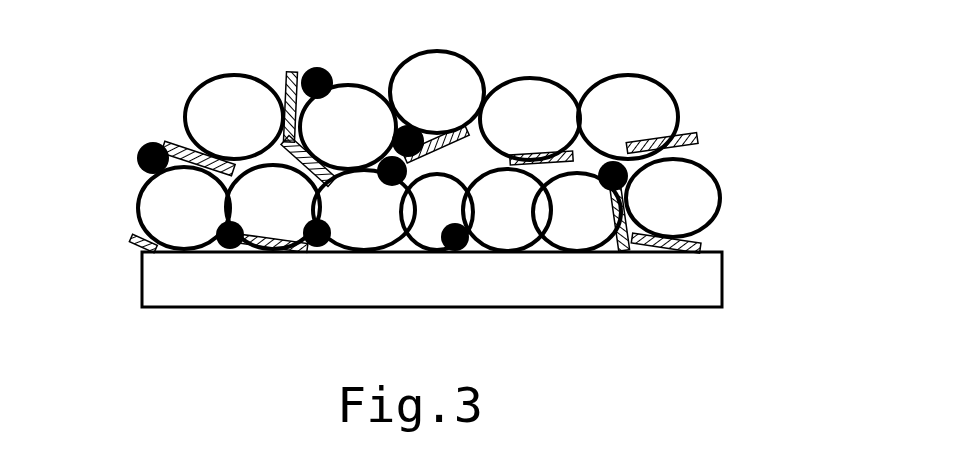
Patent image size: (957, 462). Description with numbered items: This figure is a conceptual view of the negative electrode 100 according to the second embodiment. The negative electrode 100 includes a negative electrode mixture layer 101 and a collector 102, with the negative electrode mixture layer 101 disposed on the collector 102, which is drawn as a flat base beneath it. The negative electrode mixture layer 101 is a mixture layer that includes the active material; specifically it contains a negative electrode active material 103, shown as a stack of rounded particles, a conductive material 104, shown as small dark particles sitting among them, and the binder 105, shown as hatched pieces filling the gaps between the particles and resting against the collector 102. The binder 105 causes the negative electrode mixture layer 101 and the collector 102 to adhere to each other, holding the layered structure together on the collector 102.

The negative electrode 100 is at (113, 32).
The negative electrode mixture layer 101 is at (440, 132).
The collector 102 is at (707, 288).
The negative electrode active material 103 is at (722, 190).
The conductive material 104 is at (373, 52).
The binder 105 is at (700, 138).